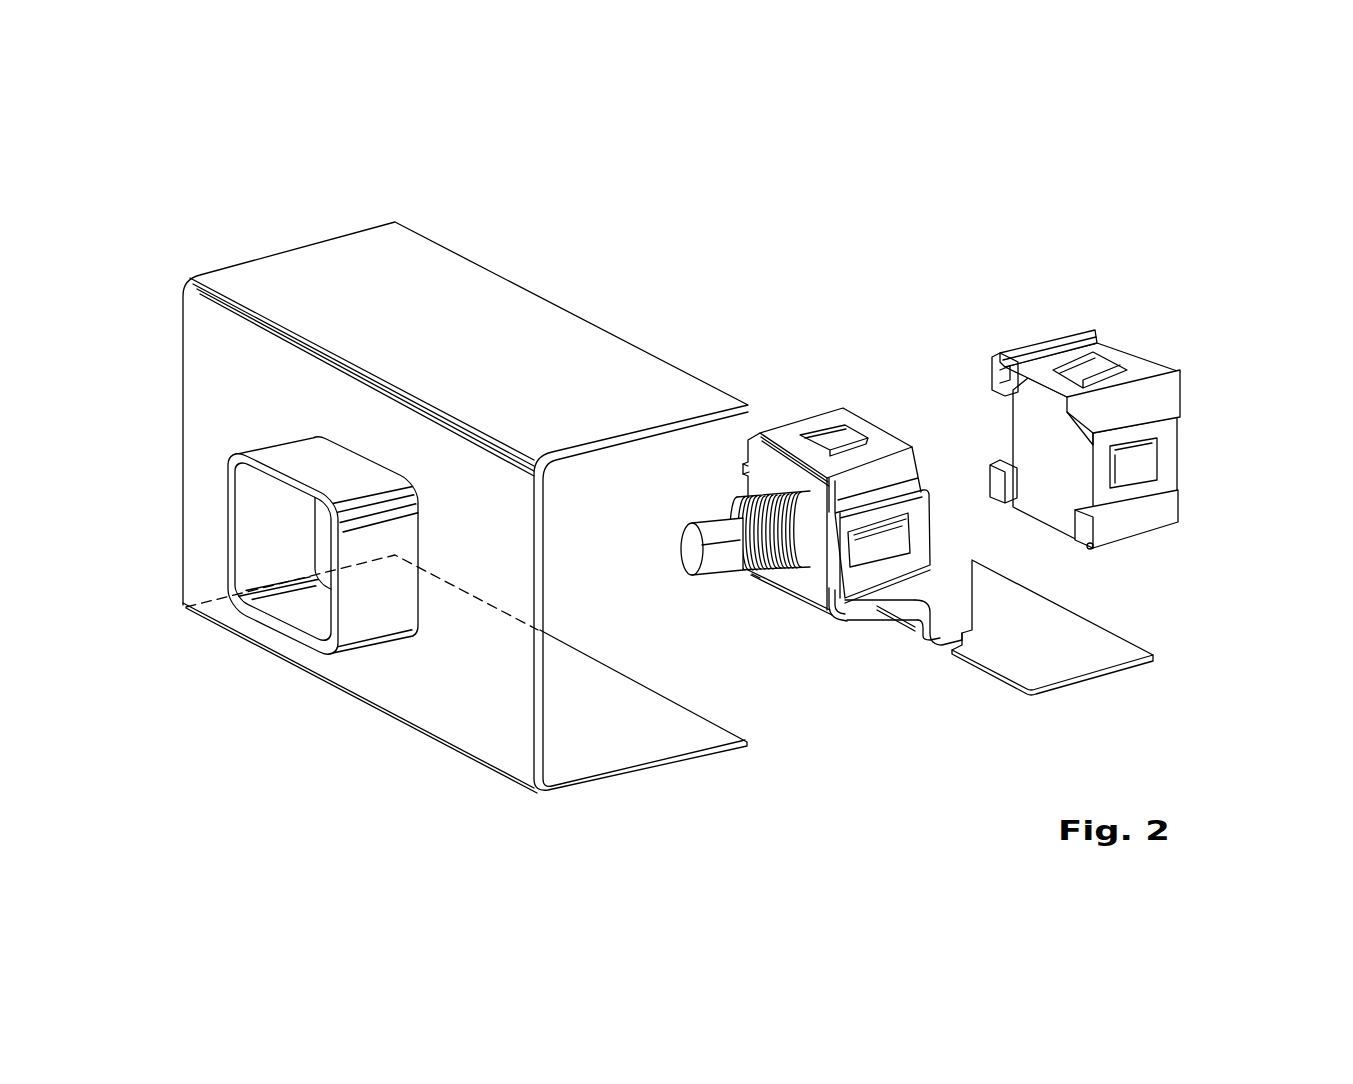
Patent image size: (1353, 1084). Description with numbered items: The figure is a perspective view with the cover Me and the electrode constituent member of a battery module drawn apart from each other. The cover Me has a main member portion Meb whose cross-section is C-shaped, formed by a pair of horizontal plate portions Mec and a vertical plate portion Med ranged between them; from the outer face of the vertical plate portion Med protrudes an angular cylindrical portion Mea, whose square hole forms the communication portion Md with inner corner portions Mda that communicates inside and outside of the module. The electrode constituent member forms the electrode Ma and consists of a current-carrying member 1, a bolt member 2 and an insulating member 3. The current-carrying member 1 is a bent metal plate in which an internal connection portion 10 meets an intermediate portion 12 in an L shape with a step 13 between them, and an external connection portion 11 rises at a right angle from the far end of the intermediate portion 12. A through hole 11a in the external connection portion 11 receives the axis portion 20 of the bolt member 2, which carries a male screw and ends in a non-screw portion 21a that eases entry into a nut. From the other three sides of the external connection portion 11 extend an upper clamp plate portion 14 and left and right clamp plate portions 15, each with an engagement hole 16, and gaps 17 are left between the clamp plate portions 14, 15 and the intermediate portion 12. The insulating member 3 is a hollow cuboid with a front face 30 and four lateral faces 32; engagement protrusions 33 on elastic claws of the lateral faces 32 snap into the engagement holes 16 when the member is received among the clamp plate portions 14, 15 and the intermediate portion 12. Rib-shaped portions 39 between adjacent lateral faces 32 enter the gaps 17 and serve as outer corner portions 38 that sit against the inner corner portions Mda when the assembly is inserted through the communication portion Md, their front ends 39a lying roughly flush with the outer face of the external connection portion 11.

The cover Me is at (420, 265).
The angular cylindrical portion Mea is at (315, 470).
The main member portion Meb is at (440, 690).
The horizontal plate portion Mec is at (598, 365).
The vertical plate portion Med is at (515, 575).
The communication portion Md is at (260, 513).
The inner corner portion Mda is at (235, 450).
The electrode Ma is at (773, 590).
The bolt member 2 is at (717, 565).
The axis portion 20 is at (692, 550).
The non-screw portion 21a is at (722, 532).
The current-carrying member 1 is at (948, 534).
The internal connection portion 10 is at (1080, 660).
The external connection portion 11 is at (787, 514).
The through hole 11a is at (790, 448).
The intermediate portion 12 is at (878, 605).
The step 13 is at (935, 615).
The clamp plate portion 14 is at (867, 443).
The clamp plate portion 15 is at (925, 550).
The engagement hole 16 is at (865, 434).
The gap 17 is at (880, 485).
The insulating member 3 is at (1128, 430).
The front face 30 is at (1129, 425).
The lateral face 32 is at (1117, 353).
The engagement protrusion 33 is at (1090, 363).
The outer corner portion 38 is at (1128, 430).
The rib-shaped portion 39 is at (1048, 337).
The front end 39a is at (992, 360).